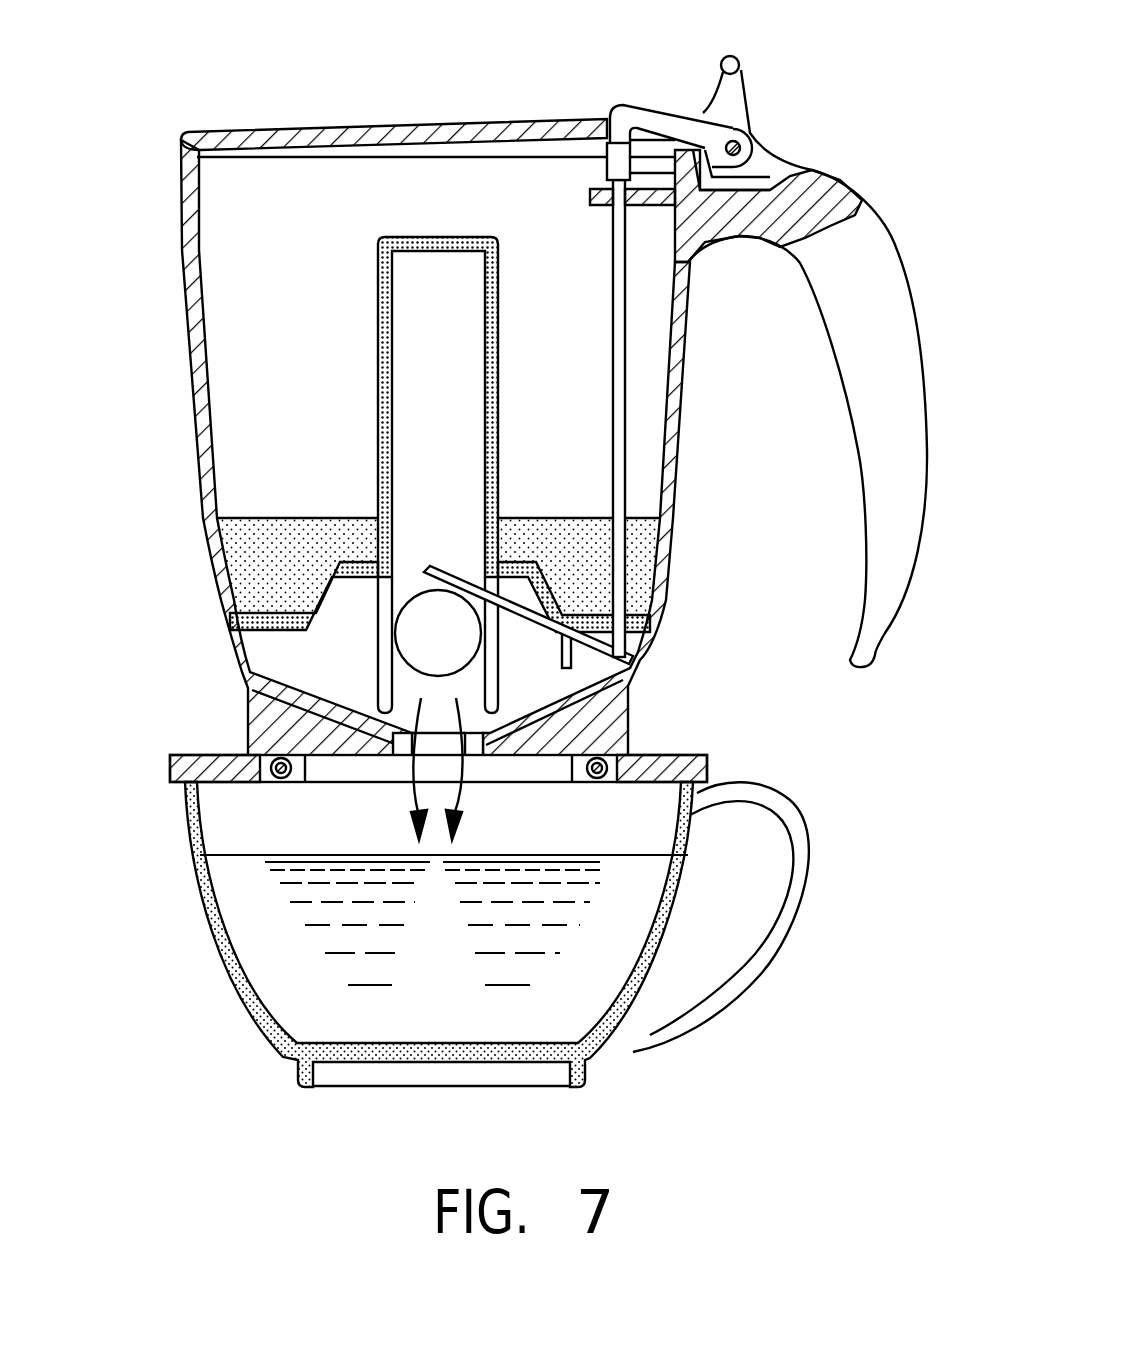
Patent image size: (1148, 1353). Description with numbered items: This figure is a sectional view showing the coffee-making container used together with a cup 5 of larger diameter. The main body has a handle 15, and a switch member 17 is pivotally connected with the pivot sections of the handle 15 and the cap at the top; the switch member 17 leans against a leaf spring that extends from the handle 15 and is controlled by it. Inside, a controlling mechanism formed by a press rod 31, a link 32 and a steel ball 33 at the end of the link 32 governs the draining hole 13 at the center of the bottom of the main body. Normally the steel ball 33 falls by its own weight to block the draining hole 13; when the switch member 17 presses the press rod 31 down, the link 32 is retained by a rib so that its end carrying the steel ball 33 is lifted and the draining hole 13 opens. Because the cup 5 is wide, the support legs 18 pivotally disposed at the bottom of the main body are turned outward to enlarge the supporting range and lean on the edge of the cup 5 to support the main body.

The cup 5 is at (190, 880).
The draining hole 13 is at (416, 800).
The handle 15 is at (877, 333).
The switch member 17 is at (665, 125).
The support legs 18 is at (194, 754).
The press rod 31 is at (620, 316).
The link 32 is at (536, 628).
The steel ball 33 is at (420, 615).